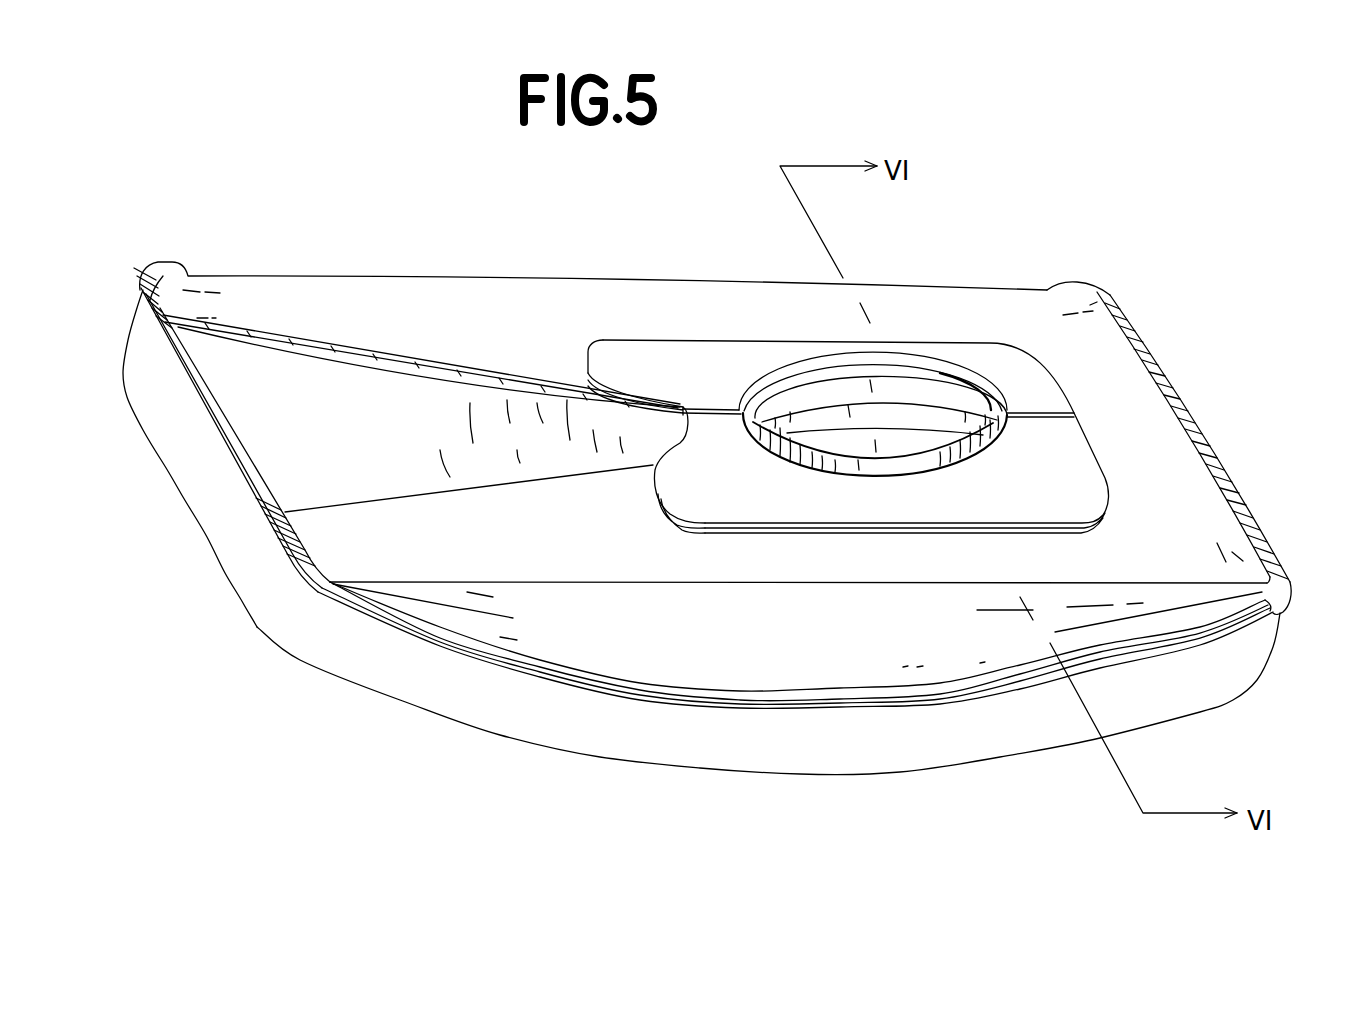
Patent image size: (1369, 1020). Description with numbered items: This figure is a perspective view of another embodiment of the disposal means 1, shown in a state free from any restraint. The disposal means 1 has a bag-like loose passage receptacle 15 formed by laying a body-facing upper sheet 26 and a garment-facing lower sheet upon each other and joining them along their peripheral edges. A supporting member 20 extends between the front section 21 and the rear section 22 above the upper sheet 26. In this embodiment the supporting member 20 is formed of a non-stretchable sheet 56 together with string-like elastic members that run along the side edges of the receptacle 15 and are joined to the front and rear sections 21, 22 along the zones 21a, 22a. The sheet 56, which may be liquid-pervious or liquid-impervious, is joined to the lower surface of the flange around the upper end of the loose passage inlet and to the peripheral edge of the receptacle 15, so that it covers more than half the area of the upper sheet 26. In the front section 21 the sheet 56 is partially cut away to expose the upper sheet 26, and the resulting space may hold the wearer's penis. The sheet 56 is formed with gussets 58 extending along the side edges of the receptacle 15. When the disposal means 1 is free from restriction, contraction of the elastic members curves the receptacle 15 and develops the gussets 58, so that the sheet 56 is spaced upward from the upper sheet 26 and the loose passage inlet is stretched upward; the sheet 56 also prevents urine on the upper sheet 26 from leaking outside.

The disposal means 1 is at (1130, 223).
The loose passage receptacle 15 is at (602, 760).
The supporting member 20 is at (297, 293).
The front section 21 is at (237, 383).
The marginal edge of front section 21a is at (153, 267).
The rear section 22 is at (1173, 443).
The marginal edge of rear section 22a is at (1260, 530).
The upper sheet 26 is at (295, 440).
The non-stretchable sheet 56 is at (447, 308).
The gussets 58 is at (482, 617).